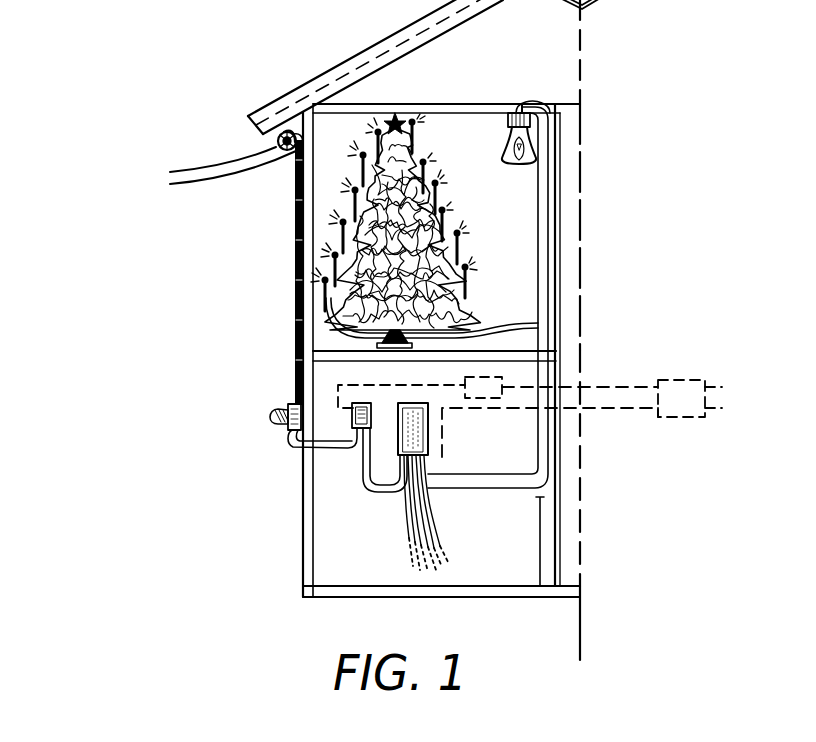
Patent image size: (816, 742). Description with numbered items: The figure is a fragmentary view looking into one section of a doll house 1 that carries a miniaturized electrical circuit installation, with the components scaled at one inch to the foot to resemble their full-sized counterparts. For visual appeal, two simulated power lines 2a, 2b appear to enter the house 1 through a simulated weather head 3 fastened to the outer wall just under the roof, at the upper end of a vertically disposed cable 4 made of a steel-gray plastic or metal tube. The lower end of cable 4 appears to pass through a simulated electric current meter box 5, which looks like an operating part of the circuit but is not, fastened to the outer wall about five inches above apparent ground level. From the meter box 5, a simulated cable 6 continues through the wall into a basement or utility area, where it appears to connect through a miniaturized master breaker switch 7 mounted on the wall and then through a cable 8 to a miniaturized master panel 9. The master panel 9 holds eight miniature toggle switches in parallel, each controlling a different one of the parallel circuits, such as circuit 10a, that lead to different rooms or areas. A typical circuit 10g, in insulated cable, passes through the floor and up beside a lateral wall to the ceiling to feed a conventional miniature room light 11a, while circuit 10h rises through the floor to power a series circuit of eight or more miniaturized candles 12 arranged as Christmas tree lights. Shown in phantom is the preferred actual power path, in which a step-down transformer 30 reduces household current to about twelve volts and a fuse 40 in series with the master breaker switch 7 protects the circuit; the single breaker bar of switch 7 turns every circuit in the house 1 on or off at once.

The doll house 1 is at (353, 50).
The simulated power line 2a is at (193, 172).
The simulated power line 2b is at (175, 184).
The simulated weather head 3 is at (272, 138).
The vertically disposed cable 4 is at (296, 270).
The simulated electric current meter box 5 is at (288, 410).
The simulated cable 6 is at (285, 441).
The master breaker switch 7 is at (352, 405).
The cable 8 is at (364, 476).
The master panel 9 is at (400, 404).
The parallel circuit 10a is at (406, 528).
The parallel circuit 10g is at (511, 490).
The parallel circuit 10h is at (492, 472).
The miniature room light 11a is at (517, 165).
The miniaturized candles 12 is at (450, 163).
The step-down transformer 30 is at (668, 417).
The fuse 40 is at (465, 381).